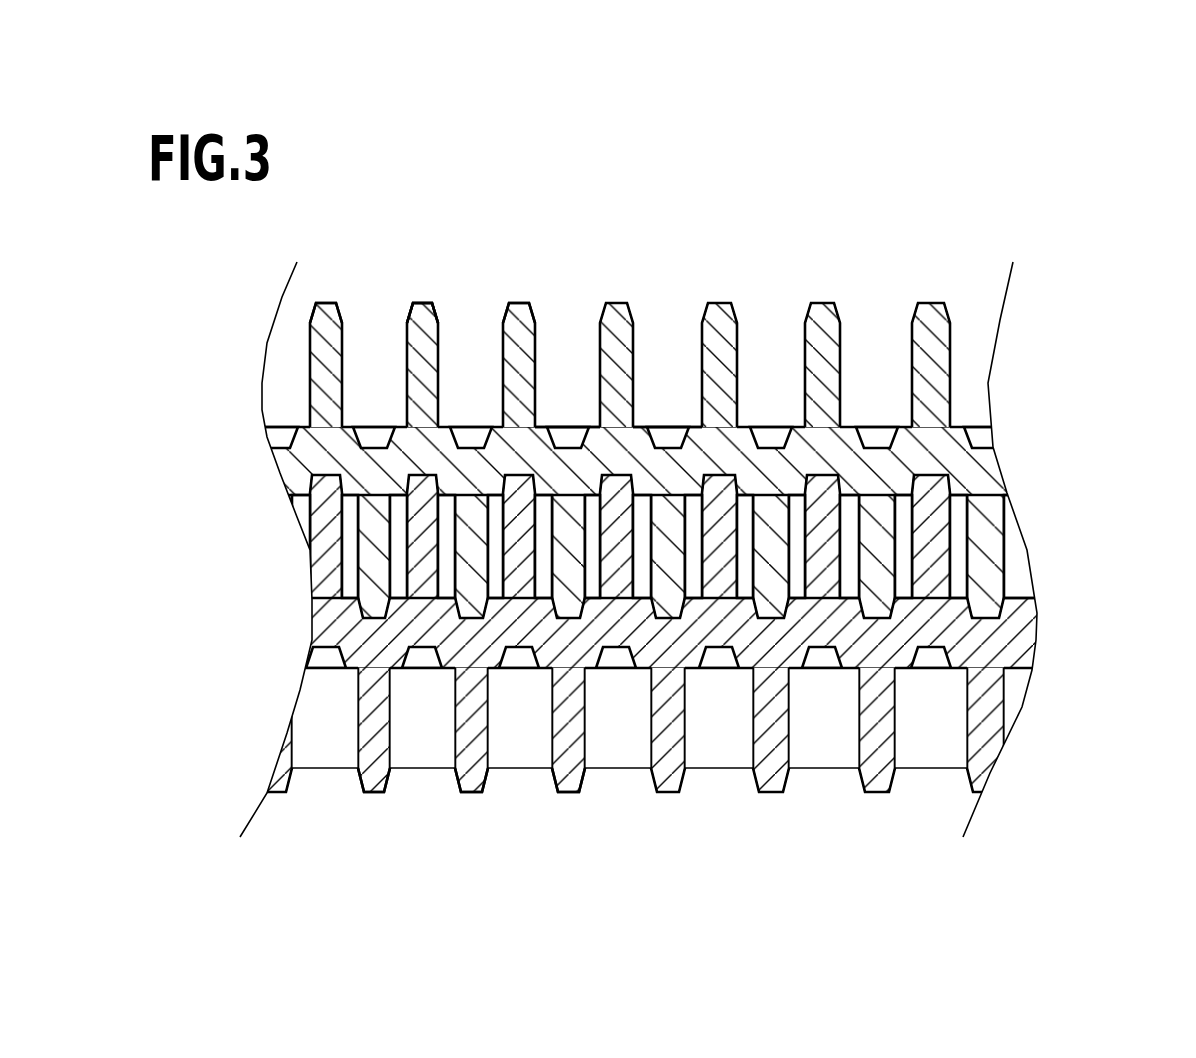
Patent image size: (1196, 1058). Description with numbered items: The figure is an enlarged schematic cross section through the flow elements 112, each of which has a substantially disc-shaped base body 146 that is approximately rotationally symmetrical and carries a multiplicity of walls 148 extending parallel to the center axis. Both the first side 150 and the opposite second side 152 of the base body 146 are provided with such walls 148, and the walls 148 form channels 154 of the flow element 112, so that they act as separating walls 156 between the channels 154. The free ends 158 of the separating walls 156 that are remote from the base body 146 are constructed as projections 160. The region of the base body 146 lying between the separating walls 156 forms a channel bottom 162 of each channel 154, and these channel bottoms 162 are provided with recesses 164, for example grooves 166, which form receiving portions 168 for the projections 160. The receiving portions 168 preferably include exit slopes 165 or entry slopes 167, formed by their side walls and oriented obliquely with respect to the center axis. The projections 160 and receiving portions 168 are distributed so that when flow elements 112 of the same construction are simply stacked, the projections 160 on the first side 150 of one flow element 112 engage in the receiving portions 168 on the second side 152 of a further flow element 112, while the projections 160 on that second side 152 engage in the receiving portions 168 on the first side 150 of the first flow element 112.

The flow element 112 is at (995, 207).
The base body 146 is at (985, 473).
The walls 148 is at (470, 740).
The first side 150 is at (1035, 388).
The second side 152 is at (1062, 524).
The channels 154 is at (283, 413).
The separating walls 156 is at (520, 362).
The free ends 158 is at (620, 330).
The projections 160 is at (427, 304).
The channel bottom 162 is at (646, 427).
The recesses 164 is at (857, 315).
The exit slopes 165 is at (645, 666).
The grooves 166 is at (983, 427).
The entry slopes 167 is at (945, 657).
The receiving portions 168 is at (671, 553).